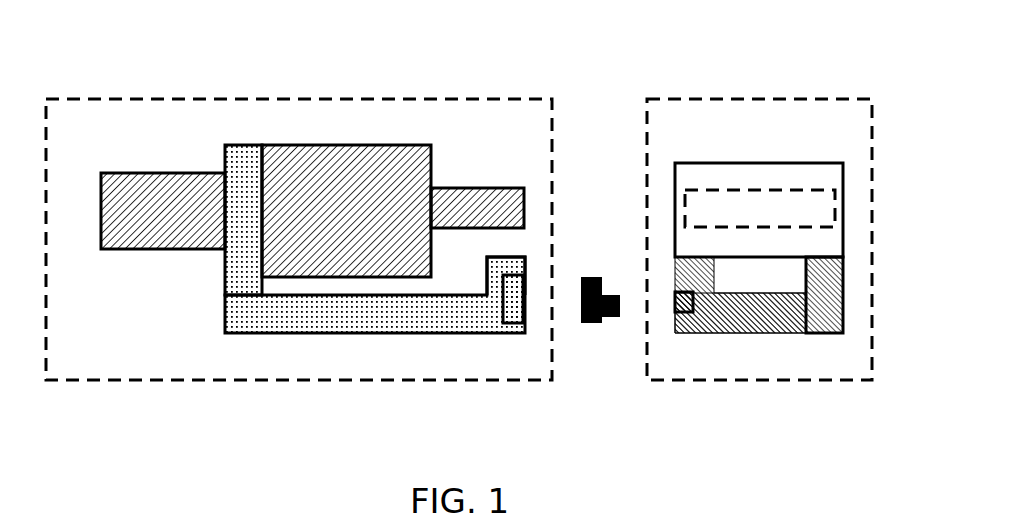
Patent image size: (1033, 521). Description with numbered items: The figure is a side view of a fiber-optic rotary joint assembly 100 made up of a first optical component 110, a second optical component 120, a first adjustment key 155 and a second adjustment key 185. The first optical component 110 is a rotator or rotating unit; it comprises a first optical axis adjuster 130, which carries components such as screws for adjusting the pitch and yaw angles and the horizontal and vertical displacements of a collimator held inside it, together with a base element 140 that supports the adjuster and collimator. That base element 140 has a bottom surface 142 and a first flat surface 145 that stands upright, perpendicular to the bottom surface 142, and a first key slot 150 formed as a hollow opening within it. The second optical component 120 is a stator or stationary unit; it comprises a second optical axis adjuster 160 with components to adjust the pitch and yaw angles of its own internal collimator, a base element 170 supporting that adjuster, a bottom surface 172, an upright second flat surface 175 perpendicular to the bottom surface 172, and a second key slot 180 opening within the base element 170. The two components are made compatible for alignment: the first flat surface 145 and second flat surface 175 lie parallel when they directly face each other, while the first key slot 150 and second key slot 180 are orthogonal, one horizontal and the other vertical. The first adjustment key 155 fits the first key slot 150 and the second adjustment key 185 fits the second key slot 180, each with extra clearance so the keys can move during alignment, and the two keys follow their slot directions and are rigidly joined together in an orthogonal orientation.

The fiber-optic rotary joint assembly 100 is at (842, 60).
The first optical component 110 is at (373, 94).
The second optical component 120 is at (712, 94).
The first optical axis adjuster 130 is at (485, 182).
The base element 140 is at (287, 323).
The bottom surface 142 is at (350, 340).
The first flat surface 145 is at (532, 263).
The first key slot 150 is at (513, 313).
The first adjustment key 155 is at (592, 332).
The second optical axis adjuster 160 is at (767, 182).
The base element 170 is at (788, 325).
The bottom surface 172 is at (750, 340).
The second flat surface 175 is at (666, 291).
The second key slot 180 is at (683, 318).
The second adjustment key 185 is at (607, 322).